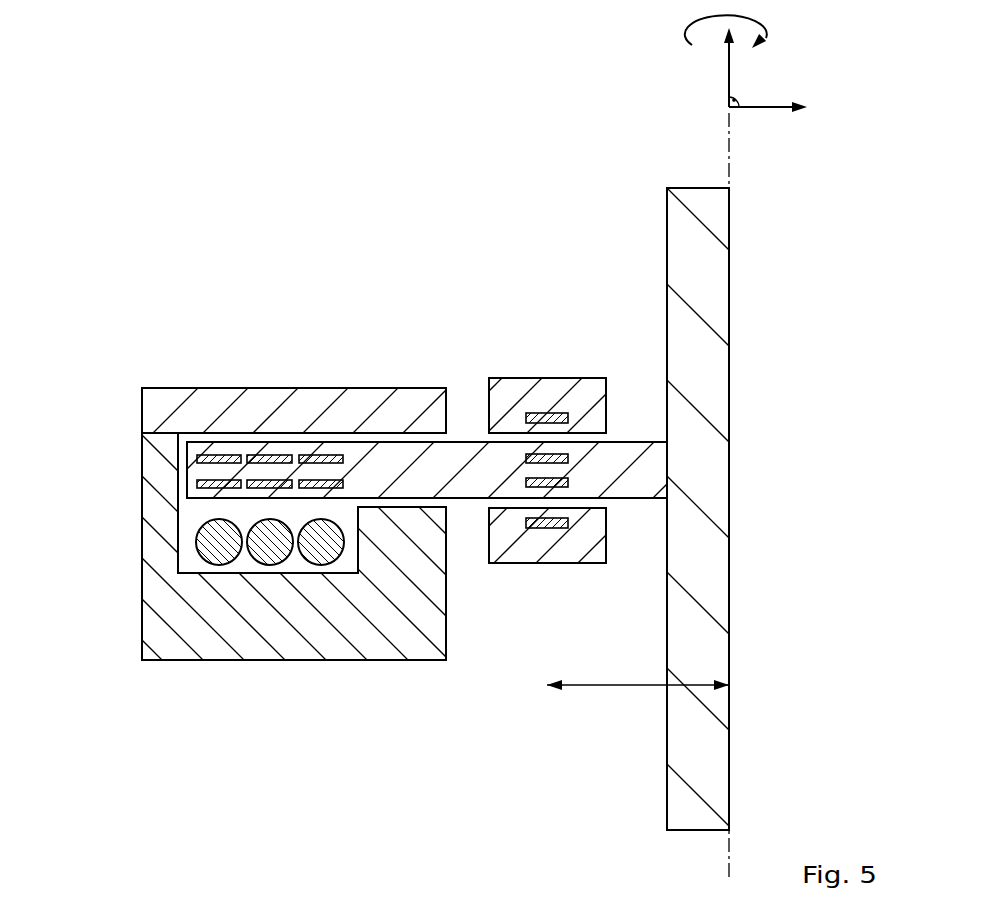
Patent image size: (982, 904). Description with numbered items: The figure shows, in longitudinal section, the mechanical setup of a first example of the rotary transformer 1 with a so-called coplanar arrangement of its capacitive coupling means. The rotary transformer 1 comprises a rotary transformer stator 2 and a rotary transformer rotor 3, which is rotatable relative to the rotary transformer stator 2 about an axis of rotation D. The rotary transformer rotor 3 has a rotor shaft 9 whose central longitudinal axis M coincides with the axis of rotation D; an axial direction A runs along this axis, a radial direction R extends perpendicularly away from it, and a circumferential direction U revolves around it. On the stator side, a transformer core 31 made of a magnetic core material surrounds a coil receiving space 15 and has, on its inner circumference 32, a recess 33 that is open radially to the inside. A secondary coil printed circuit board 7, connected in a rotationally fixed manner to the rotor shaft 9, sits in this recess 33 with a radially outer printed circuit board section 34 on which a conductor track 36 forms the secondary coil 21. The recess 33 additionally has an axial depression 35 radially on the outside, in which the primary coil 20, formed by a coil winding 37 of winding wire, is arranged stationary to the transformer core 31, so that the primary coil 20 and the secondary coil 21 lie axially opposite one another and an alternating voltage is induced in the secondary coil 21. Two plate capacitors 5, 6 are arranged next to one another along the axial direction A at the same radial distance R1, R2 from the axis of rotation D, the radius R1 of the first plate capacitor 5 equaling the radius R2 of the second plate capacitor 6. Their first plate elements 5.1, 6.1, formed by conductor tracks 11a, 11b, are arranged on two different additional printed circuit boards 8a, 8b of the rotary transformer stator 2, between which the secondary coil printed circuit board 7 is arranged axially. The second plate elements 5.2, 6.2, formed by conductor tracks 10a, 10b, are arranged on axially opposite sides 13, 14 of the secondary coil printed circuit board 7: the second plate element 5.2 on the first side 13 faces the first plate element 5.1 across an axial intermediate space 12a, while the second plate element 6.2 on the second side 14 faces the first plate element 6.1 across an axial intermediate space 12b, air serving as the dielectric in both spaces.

The rotary transformer 1 is at (160, 160).
The rotary transformer stator 2 is at (152, 292).
The rotary transformer rotor 3 is at (520, 255).
The first plate capacitor 5 is at (580, 370).
The first plate element of the first plate capacitor 5.1 is at (580, 370).
The second plate element of the first plate capacitor 5.2 is at (673, 460).
The second plate capacitor 6 is at (586, 574).
The first plate element of the second plate capacitor 6.1 is at (586, 574).
The second plate element of the second plate capacitor 6.2 is at (673, 496).
The secondary coil printed circuit board 7 is at (434, 426).
The first additional printed circuit board 8a is at (554, 360).
The second additional printed circuit board 8b is at (556, 596).
The rotor shaft 9 is at (675, 222).
The conductor track 10a is at (568, 458).
The conductor track 10b is at (568, 483).
The conductor track 11a is at (535, 392).
The conductor track 11b is at (528, 548).
The axial intermediate space of the first plate capacitor 12a is at (553, 363).
The axial intermediate space of the second plate capacitor 12b is at (547, 512).
The first side 13 is at (463, 442).
The second side 14 is at (463, 499).
The coil receiving space 15 is at (178, 527).
The primary coil 20 is at (270, 615).
The secondary coil 21 is at (270, 418).
The transformer core 31 is at (128, 496).
The inner circumference 32 is at (448, 640).
The recess 33 is at (408, 390).
The radially outer printed circuit board section 34 is at (178, 468).
The axial depression 35 is at (185, 557).
The conductor track 36 is at (330, 500).
The coil winding 37 is at (220, 560).
The axial direction A is at (729, 73).
The radial direction R is at (762, 108).
The circumferential direction U is at (688, 30).
The axis of rotation D is at (681, 495).
The central longitudinal axis M is at (726, 143).
The radius R1 is at (638, 713).
The radius R2 is at (604, 688).